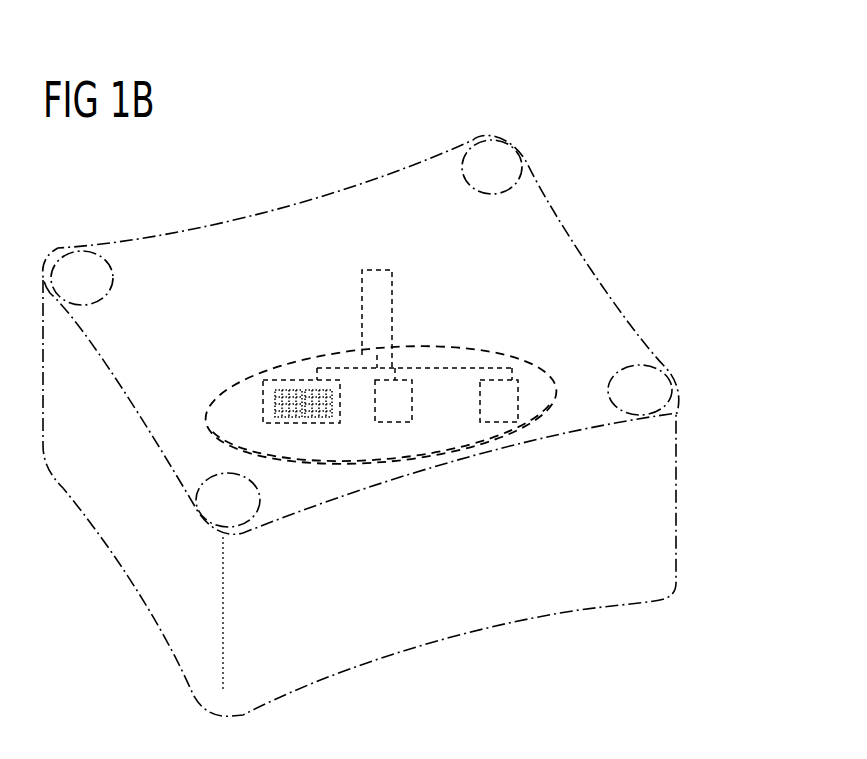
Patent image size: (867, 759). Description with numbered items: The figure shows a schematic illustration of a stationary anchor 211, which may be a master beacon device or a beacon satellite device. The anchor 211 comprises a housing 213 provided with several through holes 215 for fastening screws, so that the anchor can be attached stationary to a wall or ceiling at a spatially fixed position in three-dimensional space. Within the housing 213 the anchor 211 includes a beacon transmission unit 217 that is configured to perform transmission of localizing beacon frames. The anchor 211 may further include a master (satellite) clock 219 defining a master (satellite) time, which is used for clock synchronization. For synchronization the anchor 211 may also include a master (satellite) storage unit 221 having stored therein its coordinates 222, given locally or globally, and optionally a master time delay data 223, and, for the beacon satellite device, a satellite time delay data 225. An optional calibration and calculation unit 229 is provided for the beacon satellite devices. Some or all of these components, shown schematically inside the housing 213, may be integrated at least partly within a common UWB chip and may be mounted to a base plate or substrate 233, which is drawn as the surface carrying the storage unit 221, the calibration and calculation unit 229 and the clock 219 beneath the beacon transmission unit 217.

The stationary anchor 211 is at (197, 207).
The housing 213 is at (590, 270).
The through holes 215 is at (646, 386).
The beacon transmission unit 217 is at (378, 270).
The master (satellite) clock 219 is at (508, 380).
The master (satellite) storage unit 221 is at (272, 382).
The coordinates 222 is at (273, 393).
The master time delay data 223 is at (311, 390).
The satellite time delay data 225 is at (303, 360).
The calibration and calculation unit 229 is at (403, 380).
The base plate or substrate 233 is at (482, 455).